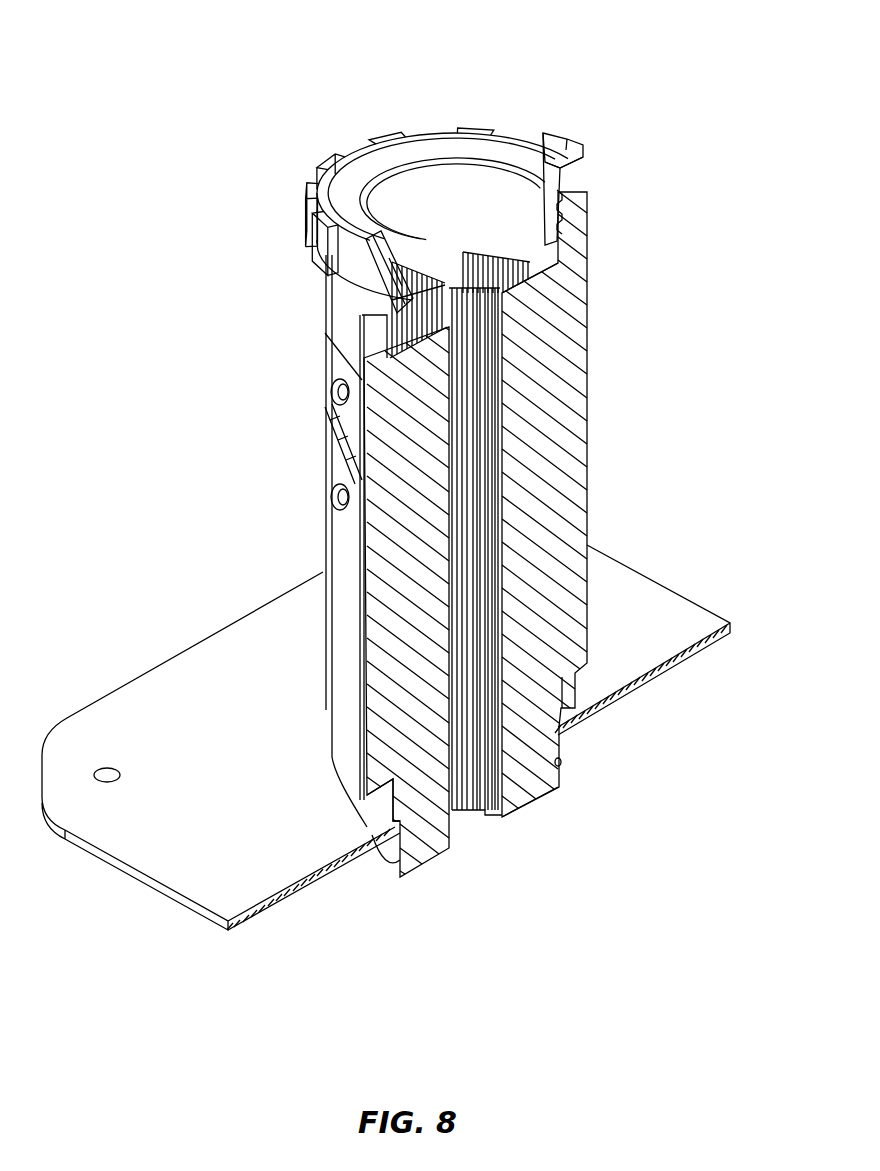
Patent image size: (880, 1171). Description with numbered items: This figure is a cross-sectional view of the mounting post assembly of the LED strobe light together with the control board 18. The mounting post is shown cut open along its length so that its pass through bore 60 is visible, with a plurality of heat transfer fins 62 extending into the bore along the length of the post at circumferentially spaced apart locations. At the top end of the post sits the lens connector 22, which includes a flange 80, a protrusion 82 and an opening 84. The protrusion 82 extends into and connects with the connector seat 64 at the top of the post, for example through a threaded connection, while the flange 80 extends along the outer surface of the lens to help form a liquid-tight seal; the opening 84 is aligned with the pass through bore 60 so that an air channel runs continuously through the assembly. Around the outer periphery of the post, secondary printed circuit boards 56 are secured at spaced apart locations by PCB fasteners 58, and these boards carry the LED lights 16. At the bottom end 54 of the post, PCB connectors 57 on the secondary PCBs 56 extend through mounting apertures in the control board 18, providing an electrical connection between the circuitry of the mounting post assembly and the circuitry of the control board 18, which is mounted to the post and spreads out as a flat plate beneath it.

The LED lights 16 is at (322, 440).
The control board 18 is at (693, 602).
The lens connector 22 is at (476, 120).
The bottom end 54 is at (528, 805).
The secondary printed circuit boards 56 is at (343, 558).
The PCB connectors 57 is at (358, 817).
The PCB fasteners 58 is at (330, 390).
The pass through bore 60 is at (500, 272).
The heat transfer fins 62 is at (458, 262).
The connector seat 64 is at (588, 200).
The flange 80 is at (583, 148).
The protrusion 82 is at (572, 192).
The opening 84 is at (422, 187).